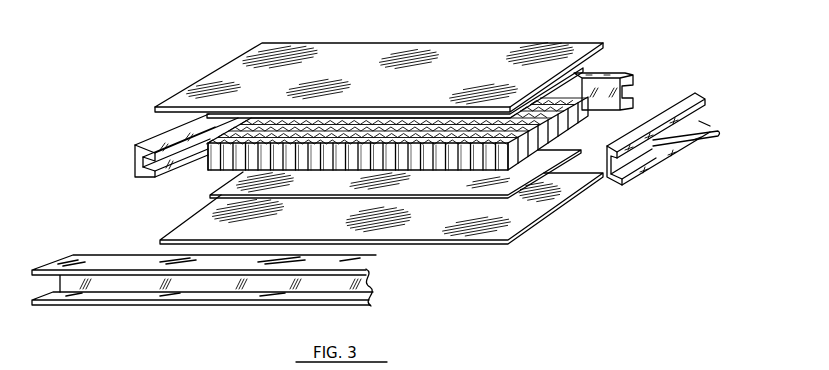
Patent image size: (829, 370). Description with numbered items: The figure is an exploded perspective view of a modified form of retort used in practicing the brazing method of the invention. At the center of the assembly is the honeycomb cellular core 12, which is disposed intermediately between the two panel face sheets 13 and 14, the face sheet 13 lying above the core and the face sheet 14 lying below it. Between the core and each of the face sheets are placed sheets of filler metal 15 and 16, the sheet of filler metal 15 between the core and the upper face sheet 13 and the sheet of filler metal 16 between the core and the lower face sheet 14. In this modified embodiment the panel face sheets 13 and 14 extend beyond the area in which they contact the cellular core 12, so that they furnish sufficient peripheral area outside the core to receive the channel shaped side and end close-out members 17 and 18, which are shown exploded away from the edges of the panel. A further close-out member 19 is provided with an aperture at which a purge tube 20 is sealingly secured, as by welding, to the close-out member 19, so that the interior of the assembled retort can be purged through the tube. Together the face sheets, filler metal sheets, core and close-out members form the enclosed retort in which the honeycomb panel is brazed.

The honeycomb cellular core 12 is at (215, 157).
The panel face sheet 13 is at (335, 62).
The panel face sheet 14 is at (548, 198).
The sheet of filler metal 15 is at (577, 72).
The sheet of filler metal 16 is at (560, 153).
The channel shaped close-out member 17 is at (630, 93).
The channel shaped close-out member 18 is at (163, 130).
The close-out member 19 is at (690, 93).
The purge tube 20 is at (695, 132).